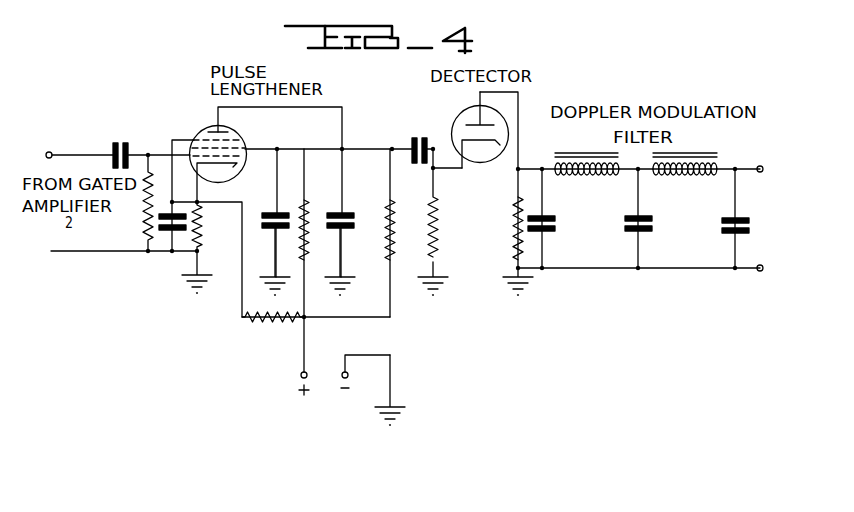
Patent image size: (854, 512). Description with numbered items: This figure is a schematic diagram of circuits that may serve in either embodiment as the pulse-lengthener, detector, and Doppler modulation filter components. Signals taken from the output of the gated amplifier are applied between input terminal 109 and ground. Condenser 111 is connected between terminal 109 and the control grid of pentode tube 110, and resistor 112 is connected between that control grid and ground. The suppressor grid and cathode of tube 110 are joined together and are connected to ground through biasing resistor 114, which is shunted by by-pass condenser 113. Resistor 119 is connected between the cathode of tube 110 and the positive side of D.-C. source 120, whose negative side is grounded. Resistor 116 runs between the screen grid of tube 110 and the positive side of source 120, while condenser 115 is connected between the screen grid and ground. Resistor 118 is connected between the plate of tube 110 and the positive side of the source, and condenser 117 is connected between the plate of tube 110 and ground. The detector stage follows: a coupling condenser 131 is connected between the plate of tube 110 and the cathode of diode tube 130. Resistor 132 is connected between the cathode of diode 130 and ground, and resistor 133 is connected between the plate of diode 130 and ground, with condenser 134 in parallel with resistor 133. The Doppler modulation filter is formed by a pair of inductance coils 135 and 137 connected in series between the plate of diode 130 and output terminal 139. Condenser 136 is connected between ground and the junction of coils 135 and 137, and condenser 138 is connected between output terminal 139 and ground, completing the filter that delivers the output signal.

The input terminal 109 is at (57, 143).
The pentode tube 110 is at (253, 128).
The condenser 111 is at (132, 144).
The resistor 112 is at (145, 212).
The by-pass condenser 113 is at (162, 242).
The biasing resistor 114 is at (201, 225).
The condenser 115 is at (270, 212).
The resistor 116 is at (312, 250).
The condenser 117 is at (355, 212).
The resistor 118 is at (394, 250).
The resistor 119 is at (264, 330).
The D.-C. source 120 is at (323, 395).
The diode tube 130 is at (482, 168).
The coupling condenser 131 is at (409, 141).
The resistor 132 is at (438, 219).
The resistor 133 is at (512, 246).
The condenser 134 is at (551, 220).
The inductance coil 135 is at (584, 177).
The condenser 136 is at (653, 220).
The inductance coil 137 is at (683, 177).
The condenser 138 is at (753, 223).
The output terminal 139 is at (758, 178).